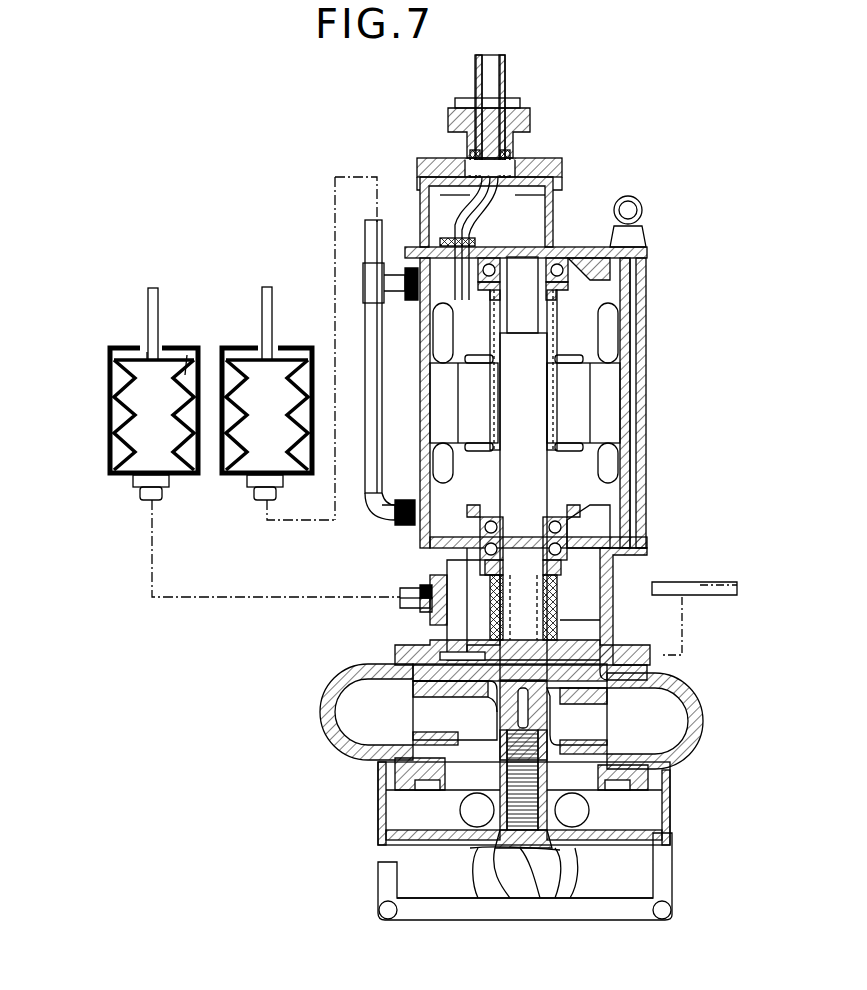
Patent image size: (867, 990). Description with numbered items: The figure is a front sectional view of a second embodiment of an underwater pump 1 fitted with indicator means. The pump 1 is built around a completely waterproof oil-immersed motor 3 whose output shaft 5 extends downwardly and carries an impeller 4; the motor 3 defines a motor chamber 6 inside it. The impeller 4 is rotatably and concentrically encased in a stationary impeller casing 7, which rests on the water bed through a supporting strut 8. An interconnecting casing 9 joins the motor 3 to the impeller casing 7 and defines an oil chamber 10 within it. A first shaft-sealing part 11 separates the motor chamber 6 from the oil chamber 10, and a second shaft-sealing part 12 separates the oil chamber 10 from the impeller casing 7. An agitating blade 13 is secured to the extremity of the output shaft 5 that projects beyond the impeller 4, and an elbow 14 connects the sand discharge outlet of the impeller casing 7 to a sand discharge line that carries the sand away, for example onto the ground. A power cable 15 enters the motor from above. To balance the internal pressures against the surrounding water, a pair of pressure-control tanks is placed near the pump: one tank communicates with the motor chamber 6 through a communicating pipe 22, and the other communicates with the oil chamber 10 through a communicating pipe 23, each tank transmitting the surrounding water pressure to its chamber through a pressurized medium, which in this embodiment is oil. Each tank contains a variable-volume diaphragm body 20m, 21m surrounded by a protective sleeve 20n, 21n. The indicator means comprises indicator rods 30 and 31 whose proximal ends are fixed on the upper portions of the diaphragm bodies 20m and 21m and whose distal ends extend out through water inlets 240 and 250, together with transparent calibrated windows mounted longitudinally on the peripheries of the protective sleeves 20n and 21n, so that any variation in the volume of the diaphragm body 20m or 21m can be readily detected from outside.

The pump 1 is at (676, 498).
The oil-immersed motor 3 is at (612, 422).
The impeller 4 is at (610, 702).
The output shaft 5 is at (535, 390).
The motor chamber 6 is at (458, 525).
The impeller casing 7 is at (695, 735).
The supporting strut 8 is at (665, 855).
The interconnecting casing 9 is at (605, 572).
The oil chamber 10 is at (467, 625).
The first shaft-sealing part 11 is at (483, 590).
The second shaft-sealing part 12 is at (402, 662).
The agitating blade 13 is at (555, 890).
The elbow 14 is at (690, 600).
The power cable 15 is at (497, 79).
The variable-volume diaphragm body 20m is at (258, 360).
The protective sleeve 20n is at (315, 460).
The variable-volume diaphragm body 21m is at (187, 355).
The protective sleeve 21n is at (108, 410).
The communicating pipe 22 is at (345, 172).
The communicating pipe 23 is at (262, 598).
The indicator rod 30 is at (270, 318).
The indicator rod 31 is at (152, 288).
The water inlet 240 is at (268, 290).
The water inlet 250 is at (147, 352).